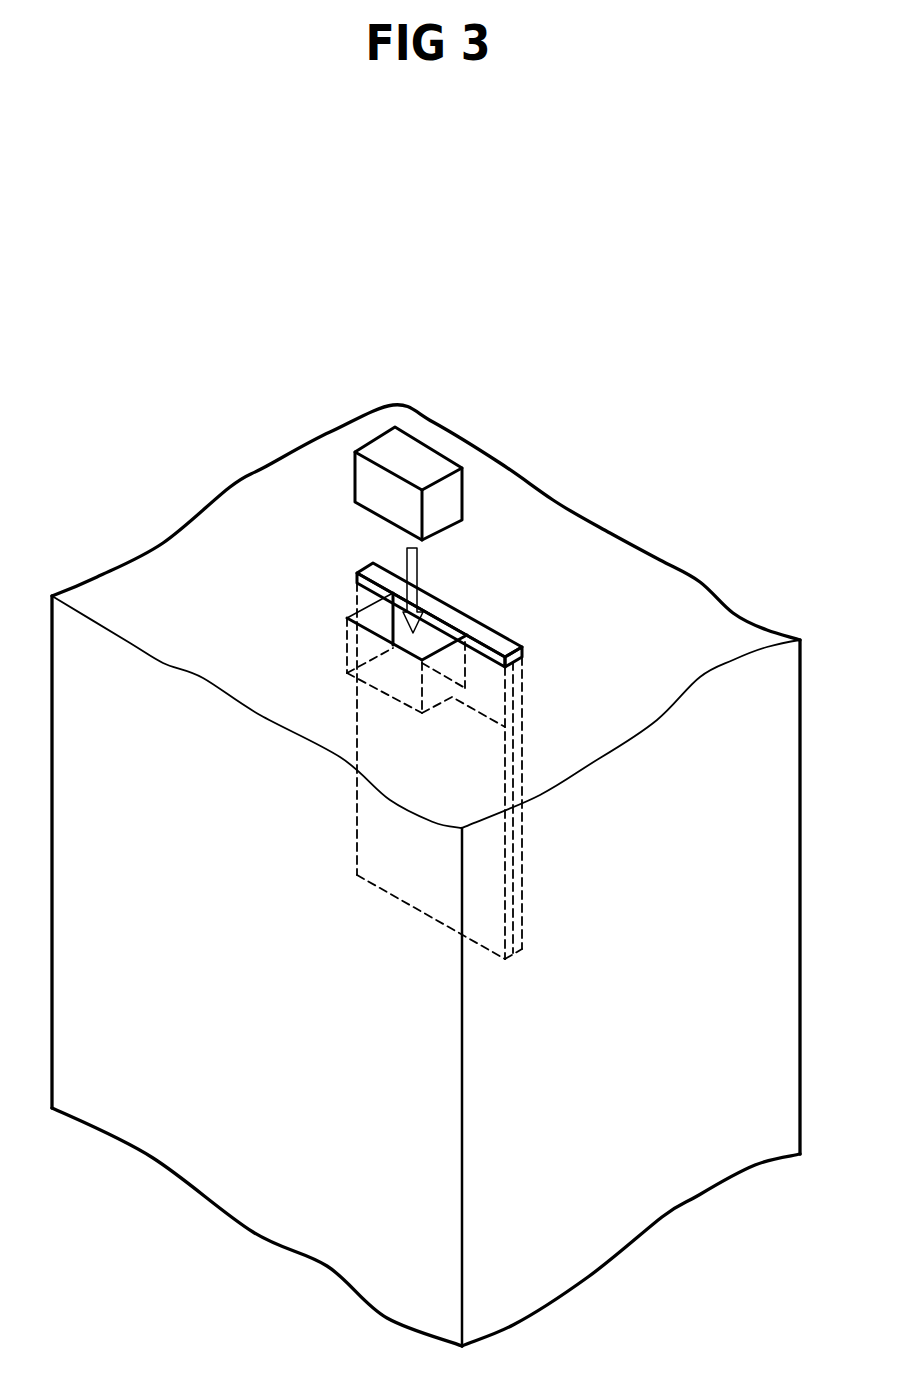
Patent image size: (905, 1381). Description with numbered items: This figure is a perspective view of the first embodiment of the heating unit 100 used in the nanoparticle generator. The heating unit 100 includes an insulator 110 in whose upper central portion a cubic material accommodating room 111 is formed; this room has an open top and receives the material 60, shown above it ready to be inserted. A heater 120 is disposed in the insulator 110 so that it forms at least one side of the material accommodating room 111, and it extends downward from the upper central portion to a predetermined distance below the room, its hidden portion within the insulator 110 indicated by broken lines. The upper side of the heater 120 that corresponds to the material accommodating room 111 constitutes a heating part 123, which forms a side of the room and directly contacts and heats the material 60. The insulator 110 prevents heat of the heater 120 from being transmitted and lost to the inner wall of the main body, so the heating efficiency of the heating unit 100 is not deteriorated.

The heating unit 100 is at (236, 443).
The insulator 110 is at (532, 533).
The material accommodating room 111 is at (396, 617).
The heater 120 is at (542, 854).
The heating part 123 is at (490, 686).
The material 60 is at (420, 457).